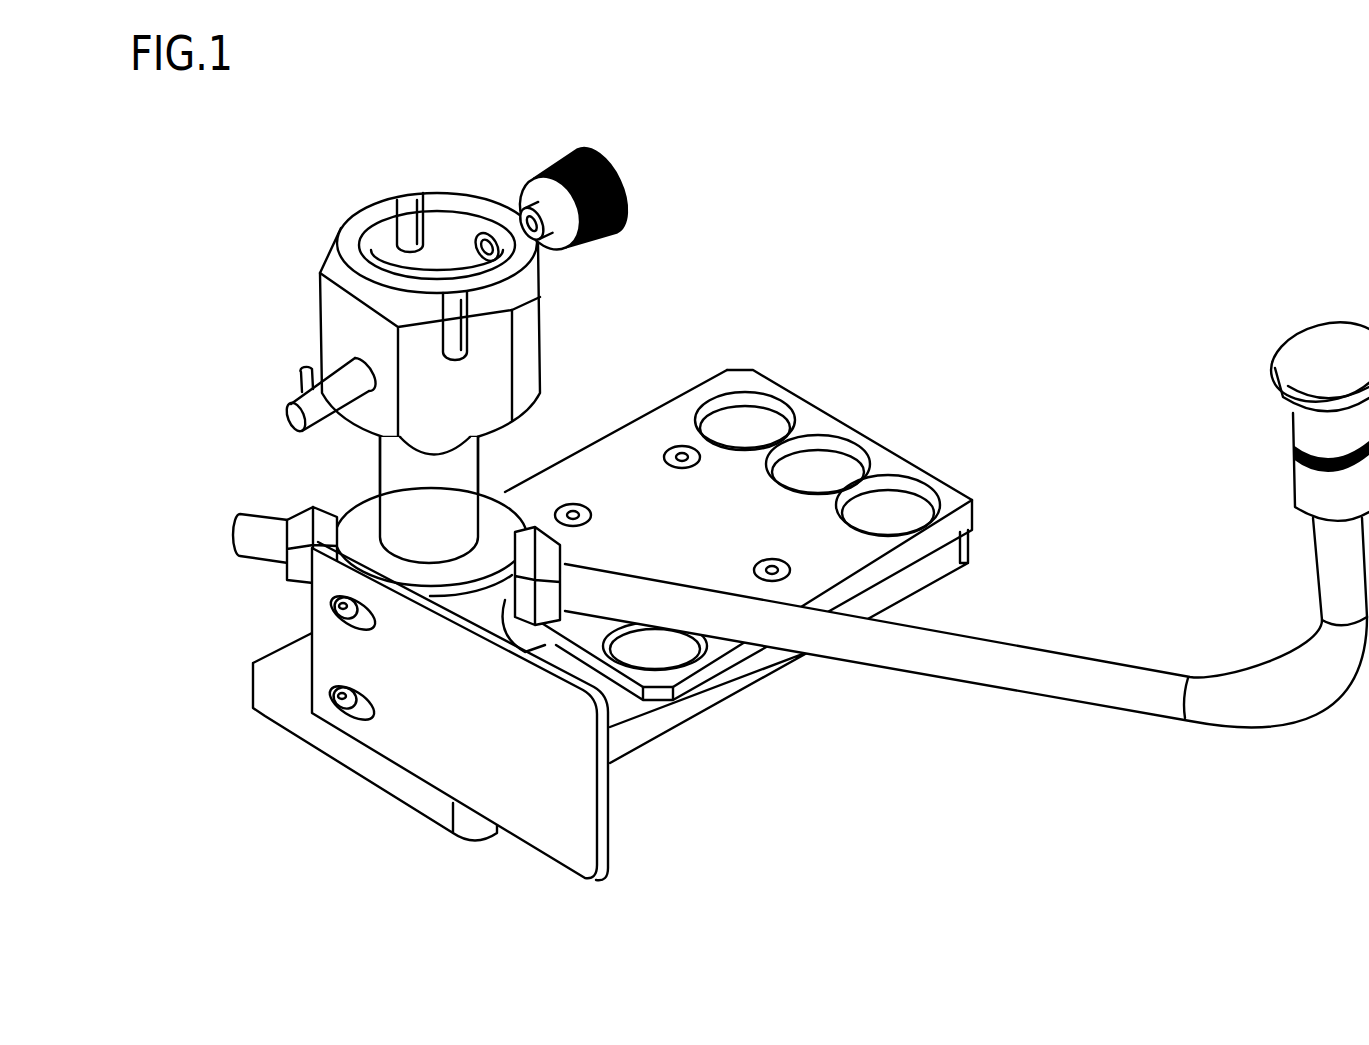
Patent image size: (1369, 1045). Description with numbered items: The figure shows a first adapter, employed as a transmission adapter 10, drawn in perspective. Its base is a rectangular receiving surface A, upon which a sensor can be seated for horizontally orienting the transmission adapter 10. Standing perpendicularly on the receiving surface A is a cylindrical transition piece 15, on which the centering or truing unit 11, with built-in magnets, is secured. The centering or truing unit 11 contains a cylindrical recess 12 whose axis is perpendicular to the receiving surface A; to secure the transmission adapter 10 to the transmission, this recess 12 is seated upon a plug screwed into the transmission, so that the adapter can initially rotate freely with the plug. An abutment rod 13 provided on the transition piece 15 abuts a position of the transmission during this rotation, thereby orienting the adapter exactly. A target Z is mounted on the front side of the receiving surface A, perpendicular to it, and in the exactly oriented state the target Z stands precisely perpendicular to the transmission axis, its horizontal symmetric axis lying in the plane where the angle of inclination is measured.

The transmission adapter 10 is at (759, 501).
The centering or truing unit 11 is at (496, 261).
The cylindrical recess 12 is at (433, 262).
The abutment rod 13 is at (990, 662).
The cylindrical transition piece 15 is at (393, 493).
The receiving surface A is at (623, 512).
The target Z is at (533, 777).